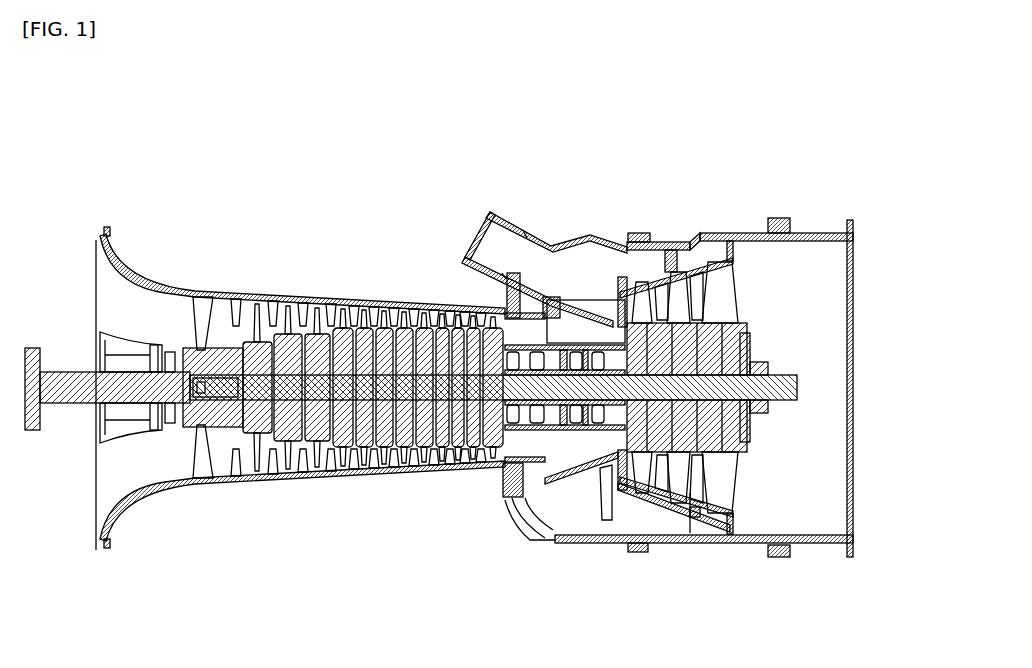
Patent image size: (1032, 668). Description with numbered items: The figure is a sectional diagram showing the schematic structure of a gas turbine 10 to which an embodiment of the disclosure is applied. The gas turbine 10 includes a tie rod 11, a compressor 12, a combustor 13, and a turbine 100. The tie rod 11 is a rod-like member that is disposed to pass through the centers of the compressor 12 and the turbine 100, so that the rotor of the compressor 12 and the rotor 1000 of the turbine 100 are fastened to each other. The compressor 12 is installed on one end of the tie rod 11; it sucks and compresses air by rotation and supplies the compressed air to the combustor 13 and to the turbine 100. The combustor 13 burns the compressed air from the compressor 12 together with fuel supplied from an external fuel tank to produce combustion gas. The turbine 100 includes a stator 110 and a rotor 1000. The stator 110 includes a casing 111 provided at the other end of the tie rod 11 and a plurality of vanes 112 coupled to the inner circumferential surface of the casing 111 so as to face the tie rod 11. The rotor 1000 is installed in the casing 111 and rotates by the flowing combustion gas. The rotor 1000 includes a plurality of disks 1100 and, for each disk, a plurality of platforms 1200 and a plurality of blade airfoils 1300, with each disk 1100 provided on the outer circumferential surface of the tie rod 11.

The gas turbine 10 is at (268, 154).
The tie rod 11 is at (370, 390).
The compressor 12 is at (267, 318).
The combustor 13 is at (466, 218).
The turbine 100 is at (805, 343).
The stator 110 is at (697, 178).
The casing 111 is at (628, 233).
The vanes 112 is at (686, 238).
The rotor 1000 is at (705, 610).
The disks 1100 is at (576, 435).
The platforms 1200 is at (625, 467).
The blade airfoils 1300 is at (697, 483).